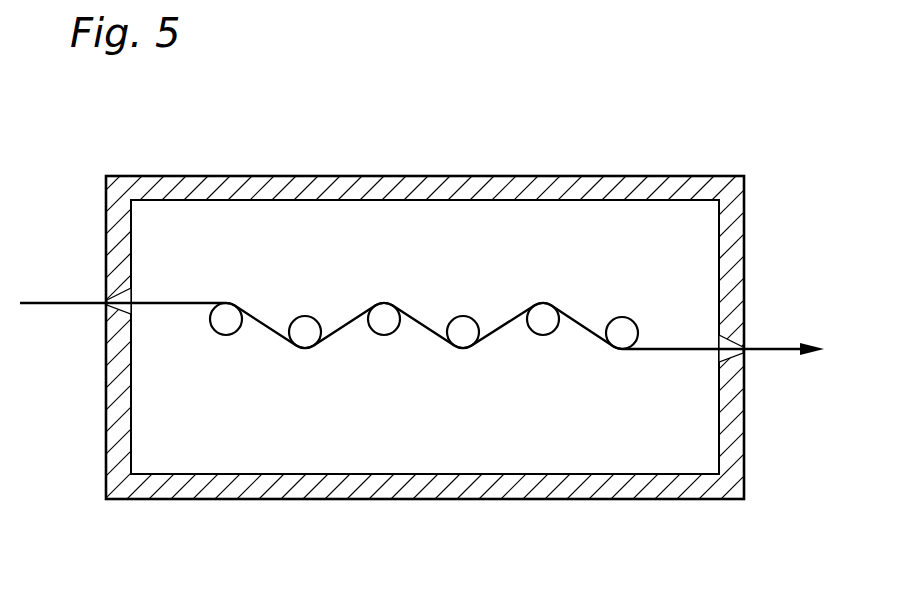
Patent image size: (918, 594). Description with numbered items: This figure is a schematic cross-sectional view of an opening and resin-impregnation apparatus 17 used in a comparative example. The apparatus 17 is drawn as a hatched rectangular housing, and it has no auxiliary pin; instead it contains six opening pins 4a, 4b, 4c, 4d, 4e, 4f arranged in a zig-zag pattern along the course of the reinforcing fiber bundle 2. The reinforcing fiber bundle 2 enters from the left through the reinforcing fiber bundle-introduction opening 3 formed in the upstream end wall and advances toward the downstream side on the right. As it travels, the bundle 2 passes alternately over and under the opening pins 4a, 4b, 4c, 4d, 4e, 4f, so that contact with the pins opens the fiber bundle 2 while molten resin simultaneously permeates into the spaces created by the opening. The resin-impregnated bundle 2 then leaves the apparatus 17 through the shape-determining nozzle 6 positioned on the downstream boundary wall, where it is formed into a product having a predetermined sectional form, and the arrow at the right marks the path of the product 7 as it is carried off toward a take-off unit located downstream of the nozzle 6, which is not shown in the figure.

The reinforcing fiber bundle 2 is at (48, 300).
The reinforcing fiber bundle-introduction opening 3 is at (98, 307).
The opening pin 4a is at (226, 327).
The opening pin 4b is at (305, 331).
The opening pin 4c is at (385, 327).
The opening pin 4d is at (463, 331).
The opening pin 4e is at (543, 327).
The opening pin 4f is at (622, 331).
The shape-determining nozzle 6 is at (752, 360).
The output optical fiber 7 is at (784, 343).
The opening and resin-impregnation apparatus 17 is at (424, 176).